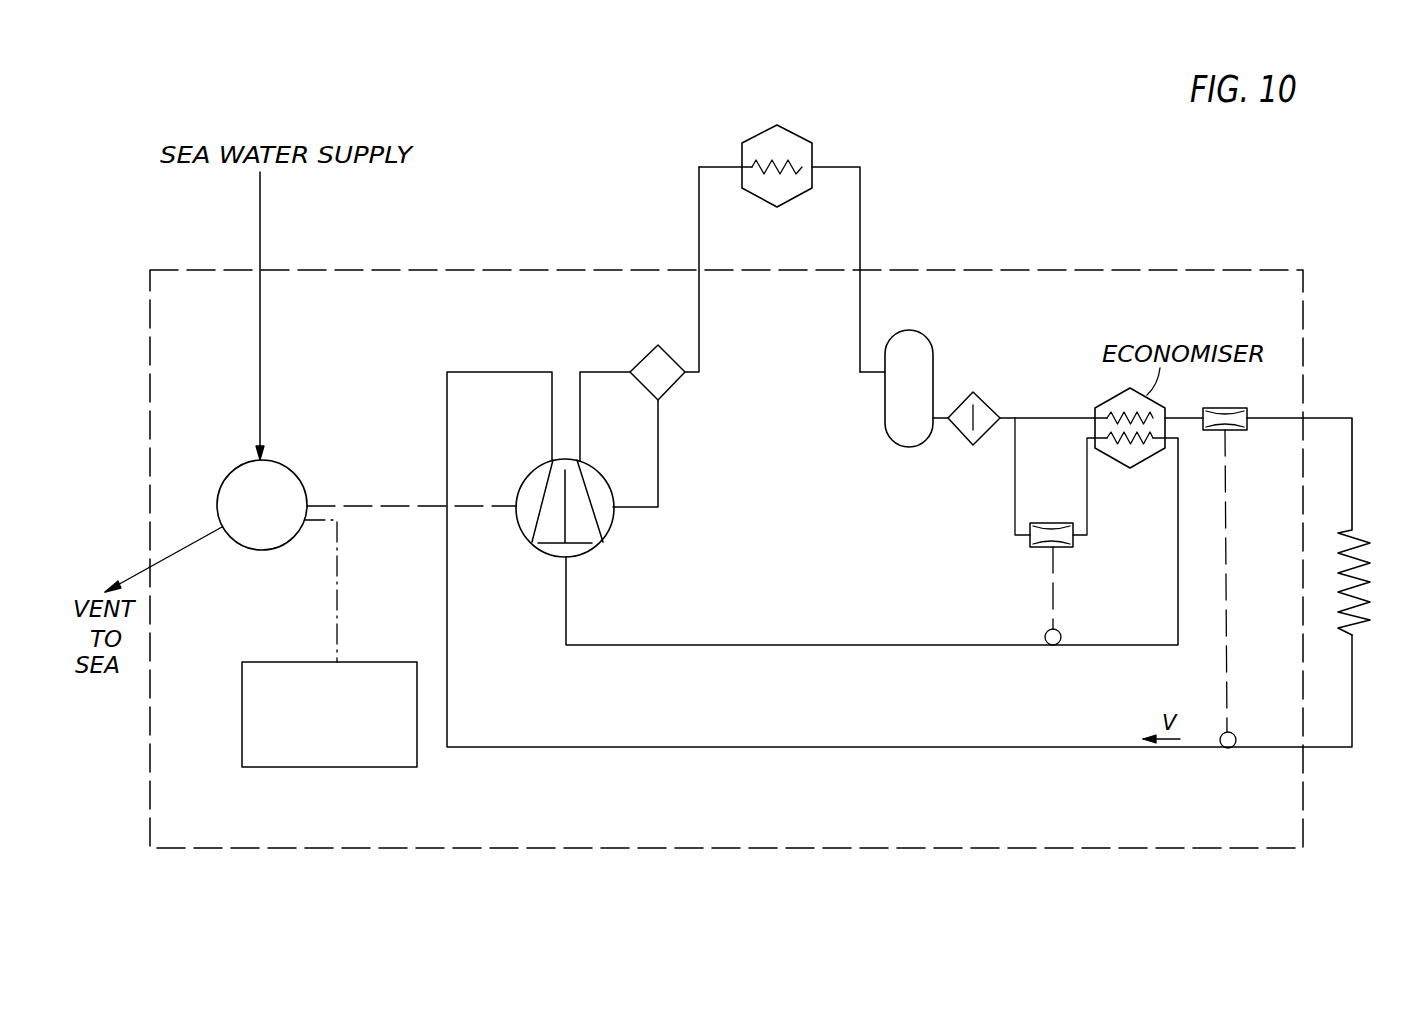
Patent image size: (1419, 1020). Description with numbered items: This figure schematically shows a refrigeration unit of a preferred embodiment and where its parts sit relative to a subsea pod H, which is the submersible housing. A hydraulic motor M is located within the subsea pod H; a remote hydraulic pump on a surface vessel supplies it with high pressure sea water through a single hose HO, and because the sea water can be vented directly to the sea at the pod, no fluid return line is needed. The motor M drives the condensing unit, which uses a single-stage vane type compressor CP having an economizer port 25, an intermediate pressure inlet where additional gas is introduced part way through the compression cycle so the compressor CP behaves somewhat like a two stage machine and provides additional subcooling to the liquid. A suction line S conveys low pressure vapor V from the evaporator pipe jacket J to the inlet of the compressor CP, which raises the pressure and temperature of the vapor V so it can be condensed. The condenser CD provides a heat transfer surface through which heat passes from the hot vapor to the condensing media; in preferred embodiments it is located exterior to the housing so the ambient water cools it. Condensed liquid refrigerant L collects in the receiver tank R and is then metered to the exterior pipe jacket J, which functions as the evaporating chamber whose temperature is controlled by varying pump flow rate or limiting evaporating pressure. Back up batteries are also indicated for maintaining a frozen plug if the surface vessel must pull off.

The subsea pod H is at (1033, 848).
The hose HO is at (260, 222).
The motor M is at (293, 470).
The back up battery B is at (342, 767).
The suction line S is at (965, 749).
The evaporator pipe jacket J is at (1373, 569).
The receiver tank R is at (933, 363).
The liquid refrigerant L is at (852, 305).
The condenser CD is at (798, 137).
The vapor V is at (708, 302).
The compressor CP is at (588, 534).
The economizer port 25 is at (563, 560).